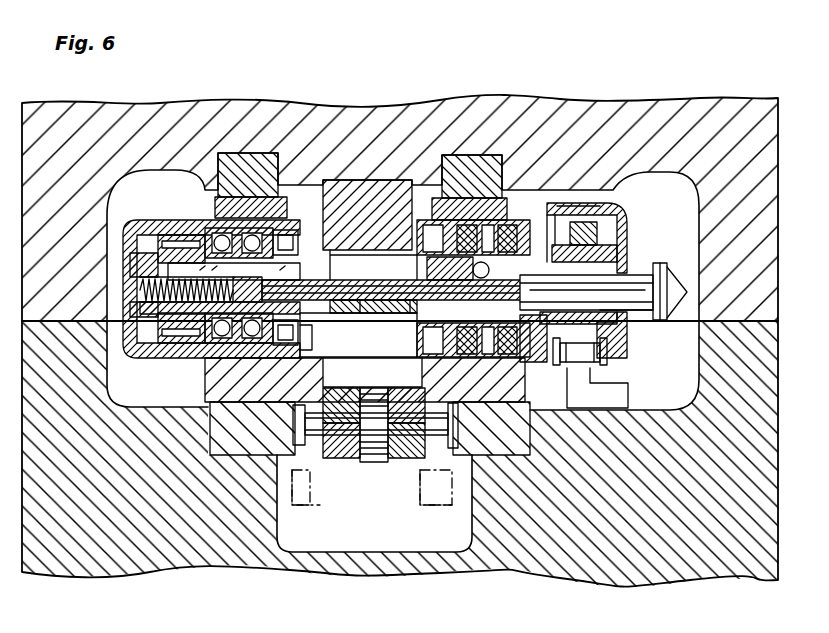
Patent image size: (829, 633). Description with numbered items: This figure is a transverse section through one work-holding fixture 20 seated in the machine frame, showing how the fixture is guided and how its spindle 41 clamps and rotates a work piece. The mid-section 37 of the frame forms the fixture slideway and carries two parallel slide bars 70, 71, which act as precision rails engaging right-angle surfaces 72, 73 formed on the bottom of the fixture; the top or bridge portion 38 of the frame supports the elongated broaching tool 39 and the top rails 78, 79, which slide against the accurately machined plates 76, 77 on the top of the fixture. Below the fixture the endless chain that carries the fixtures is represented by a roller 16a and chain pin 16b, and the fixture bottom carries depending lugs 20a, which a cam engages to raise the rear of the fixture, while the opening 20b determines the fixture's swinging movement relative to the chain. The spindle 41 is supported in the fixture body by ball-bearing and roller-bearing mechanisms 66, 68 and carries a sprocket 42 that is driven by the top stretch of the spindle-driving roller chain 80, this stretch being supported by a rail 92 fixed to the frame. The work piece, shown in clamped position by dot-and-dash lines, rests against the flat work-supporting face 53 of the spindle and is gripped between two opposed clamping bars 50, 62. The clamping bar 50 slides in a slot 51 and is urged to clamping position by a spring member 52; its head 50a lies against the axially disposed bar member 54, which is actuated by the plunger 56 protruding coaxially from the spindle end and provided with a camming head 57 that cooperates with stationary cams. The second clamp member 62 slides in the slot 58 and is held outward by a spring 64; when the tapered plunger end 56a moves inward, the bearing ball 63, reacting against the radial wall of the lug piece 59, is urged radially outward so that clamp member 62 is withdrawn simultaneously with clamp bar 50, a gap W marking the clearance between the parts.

The top or bridge portion 38 is at (545, 108).
The mid-section of the machine frame 37 is at (622, 570).
The top rail 78 is at (305, 106).
The machined and ground plate 76 is at (216, 207).
The top rail 79 is at (468, 156).
The machined and ground plate 77 is at (484, 205).
The broaching tool 39 is at (367, 215).
The fixture 20 is at (210, 383).
The ball-bearing mechanism 66 is at (205, 360).
The slot 51 is at (160, 248).
The plunger head 50a is at (208, 226).
The spring member 52 is at (140, 290).
The clamping bar 50 is at (304, 270).
The gap W is at (392, 273).
The flat surface of the spindle 53 is at (358, 347).
The axially disposed bar member 54 is at (315, 337).
The slot 58 is at (370, 296).
The lug piece 59 is at (418, 322).
The second clamp member 62 is at (425, 283).
The sprocket 42 is at (612, 226).
The spindle 41 is at (616, 200).
The bearing ball 63 is at (572, 231).
The spring 64 is at (605, 250).
The tapered plunger end 56a is at (586, 292).
The camming head 57 is at (668, 268).
The plunger 56 is at (634, 322).
The roller-bearing mechanism 68 is at (538, 354).
The roller chain 80 is at (607, 356).
The rail 92 is at (612, 393).
The slide bar 70 is at (245, 455).
The slide bar 71 is at (500, 455).
The roller 16a is at (376, 423).
The right angle disposed surface 72 is at (298, 448).
The right angle disposed surface 73 is at (408, 452).
The chain pin 16b is at (372, 460).
The opening 20b is at (372, 492).
The depending lug 20a is at (382, 504).